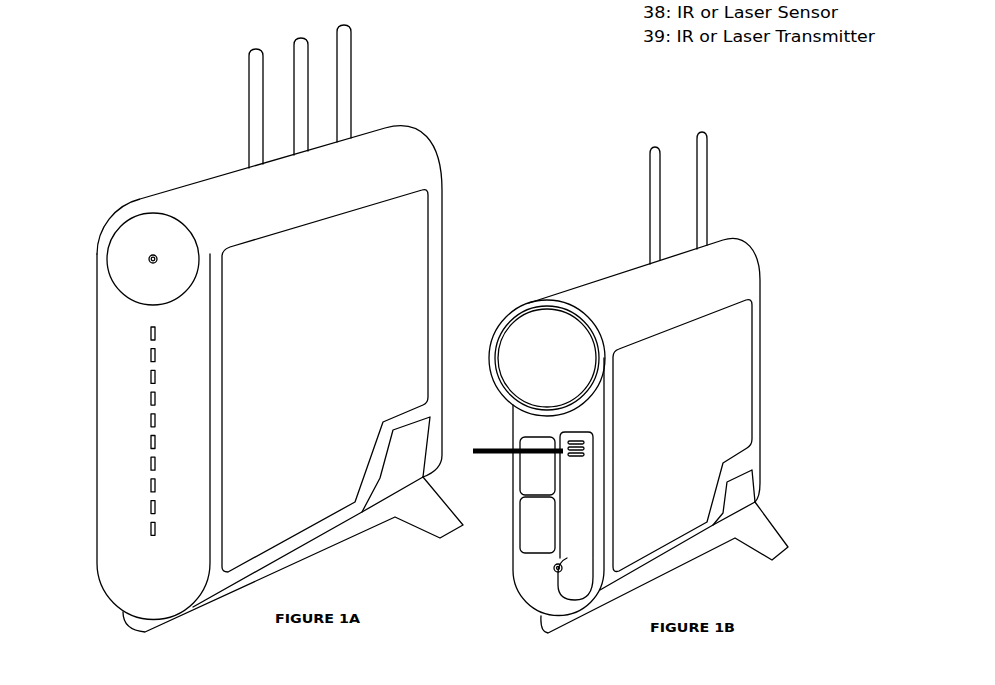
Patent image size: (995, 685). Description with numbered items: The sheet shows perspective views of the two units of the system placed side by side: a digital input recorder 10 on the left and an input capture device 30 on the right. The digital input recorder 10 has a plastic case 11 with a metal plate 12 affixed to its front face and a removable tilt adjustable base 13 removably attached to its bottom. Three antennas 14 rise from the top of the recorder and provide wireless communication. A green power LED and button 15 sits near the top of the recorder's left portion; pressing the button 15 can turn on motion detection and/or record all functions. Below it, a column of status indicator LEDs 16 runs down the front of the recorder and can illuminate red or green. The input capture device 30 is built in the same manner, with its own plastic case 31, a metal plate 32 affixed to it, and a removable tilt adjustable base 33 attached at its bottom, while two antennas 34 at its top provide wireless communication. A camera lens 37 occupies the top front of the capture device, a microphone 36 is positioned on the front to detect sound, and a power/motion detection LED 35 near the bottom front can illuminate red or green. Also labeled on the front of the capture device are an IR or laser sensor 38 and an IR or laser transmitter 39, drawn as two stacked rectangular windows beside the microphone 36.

In FIG. 1A, the digital input recorder 10 is at (437, 123).
In FIG. 1A, the plastic case 11 is at (228, 195).
In FIG. 1A, the metal plate 12 is at (247, 445).
In FIG. 1A, the removable tilt adjustable base 13 is at (380, 520).
In FIG. 1A, the antennas 14 is at (362, 50).
In FIG. 1A, the green power LED and button 15 is at (138, 260).
In FIG. 1A, the indicator lights 16 is at (128, 380).
In FIG. 1B, the input capture device 30 is at (753, 237).
In FIG. 1B, the plastic case 31 is at (603, 295).
In FIG. 1B, the metal plate 32 is at (728, 363).
In FIG. 1B, the removable tilt adjustable base 33 is at (705, 545).
In FIG. 1B, the antennas 34 is at (643, 167).
In FIG. 1B, the power/motion detection LED 35 is at (550, 573).
In FIG. 1B, the microphone 36 is at (587, 451).
In FIG. 1B, the camera lens 37 is at (538, 337).
In FIG. 1B, the IR or Laser Sensor 38 is at (545, 482).
In FIG. 1B, the IR or Laser Transmitter 39 is at (542, 518).